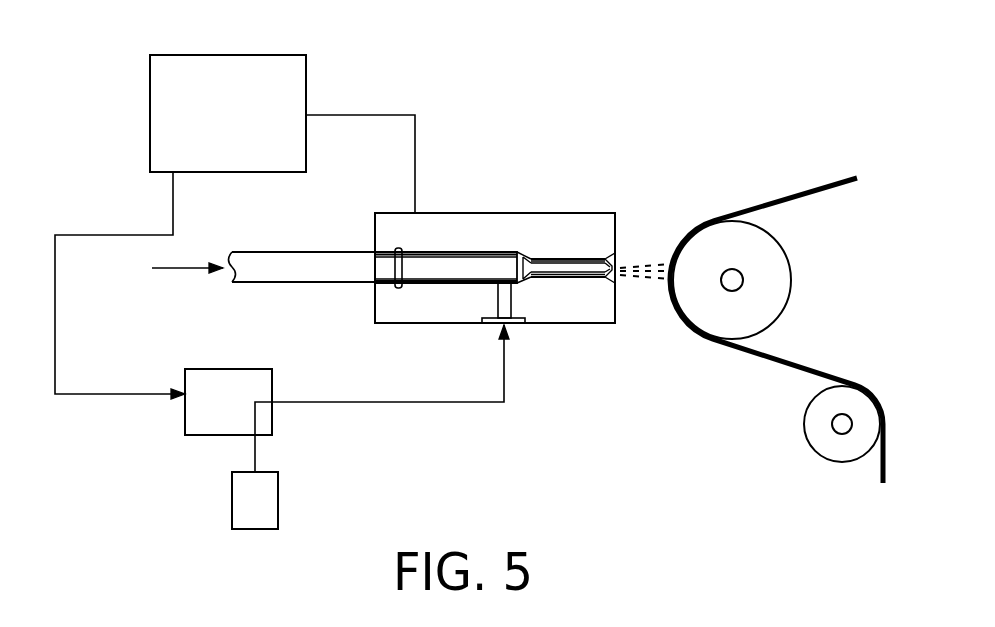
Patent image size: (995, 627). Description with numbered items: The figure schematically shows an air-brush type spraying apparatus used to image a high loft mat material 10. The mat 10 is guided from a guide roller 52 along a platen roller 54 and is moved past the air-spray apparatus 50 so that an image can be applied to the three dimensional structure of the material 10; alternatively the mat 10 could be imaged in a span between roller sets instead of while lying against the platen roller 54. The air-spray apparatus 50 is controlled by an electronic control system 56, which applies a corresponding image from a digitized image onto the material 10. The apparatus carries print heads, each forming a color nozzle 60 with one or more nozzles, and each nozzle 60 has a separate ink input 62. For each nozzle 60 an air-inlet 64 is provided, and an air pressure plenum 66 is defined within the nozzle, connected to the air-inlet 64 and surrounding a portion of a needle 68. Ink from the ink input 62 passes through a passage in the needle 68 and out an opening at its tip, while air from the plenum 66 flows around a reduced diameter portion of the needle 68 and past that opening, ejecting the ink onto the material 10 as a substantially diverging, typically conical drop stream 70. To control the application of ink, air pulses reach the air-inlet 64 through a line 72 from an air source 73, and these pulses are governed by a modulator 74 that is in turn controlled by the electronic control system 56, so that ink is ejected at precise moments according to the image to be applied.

The material 10 is at (838, 177).
The air-spray apparatus 50 is at (583, 212).
The guide roller 52 is at (832, 450).
The platen roller 54 is at (777, 270).
The electronic control system 56 is at (225, 63).
The print head 60 is at (613, 262).
The ink input 62 is at (170, 270).
The air-inlet 64 is at (508, 307).
The air pressure plenum 66 is at (537, 255).
The needle 68 is at (423, 270).
The drop stream 70 is at (645, 279).
The line 72 is at (407, 405).
The air source 73 is at (270, 499).
The modulator 74 is at (200, 427).